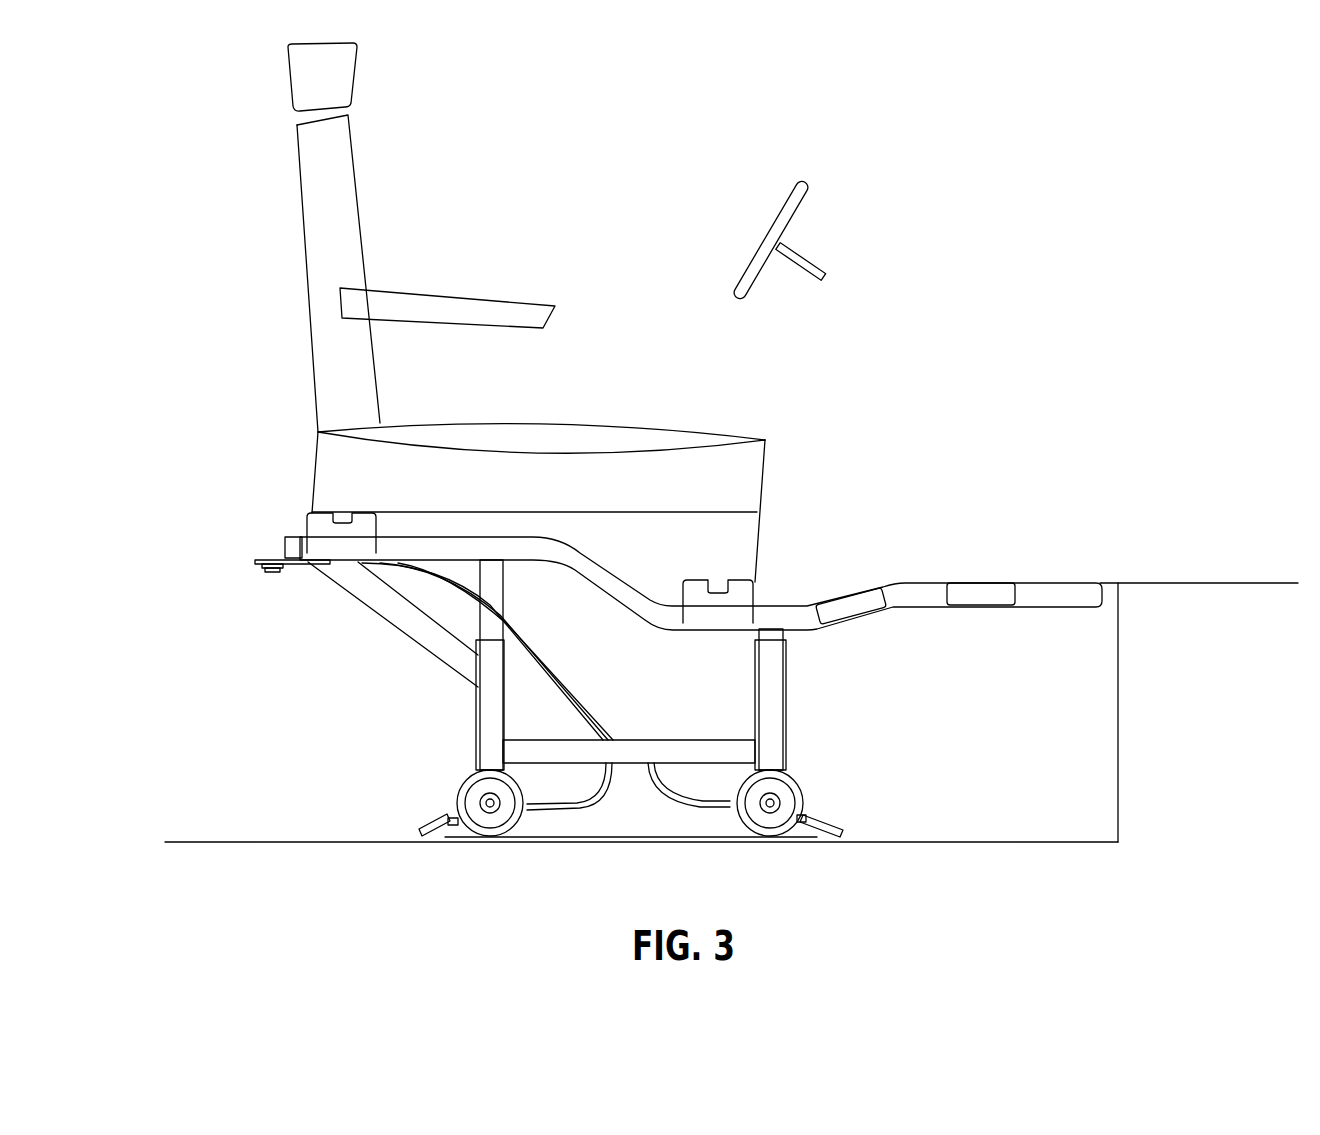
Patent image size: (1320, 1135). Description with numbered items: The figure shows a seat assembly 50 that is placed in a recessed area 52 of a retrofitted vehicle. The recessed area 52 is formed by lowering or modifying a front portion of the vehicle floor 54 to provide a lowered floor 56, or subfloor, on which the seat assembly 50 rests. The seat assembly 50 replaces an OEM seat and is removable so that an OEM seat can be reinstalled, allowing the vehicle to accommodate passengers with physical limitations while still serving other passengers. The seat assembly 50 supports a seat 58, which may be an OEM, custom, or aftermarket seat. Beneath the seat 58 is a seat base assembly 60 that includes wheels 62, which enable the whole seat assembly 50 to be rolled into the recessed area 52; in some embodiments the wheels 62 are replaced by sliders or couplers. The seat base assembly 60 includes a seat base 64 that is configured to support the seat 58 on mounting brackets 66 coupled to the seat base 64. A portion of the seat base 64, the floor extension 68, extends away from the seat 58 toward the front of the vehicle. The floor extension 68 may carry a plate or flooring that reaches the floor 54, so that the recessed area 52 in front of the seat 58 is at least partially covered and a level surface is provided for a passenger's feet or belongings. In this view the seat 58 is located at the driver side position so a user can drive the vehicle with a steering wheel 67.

The seat assembly 50 is at (265, 532).
The recessed area 52 is at (1080, 678).
The floor 54 is at (1225, 568).
The lowered floor 56 is at (1010, 840).
The seat 58 is at (267, 213).
The seat base assembly 60 is at (788, 687).
The wheels 62 is at (462, 780).
The seat base 64 is at (567, 583).
The mounting brackets 66 is at (313, 527).
The steering wheel 67 is at (835, 225).
The floor extension 68 is at (925, 590).